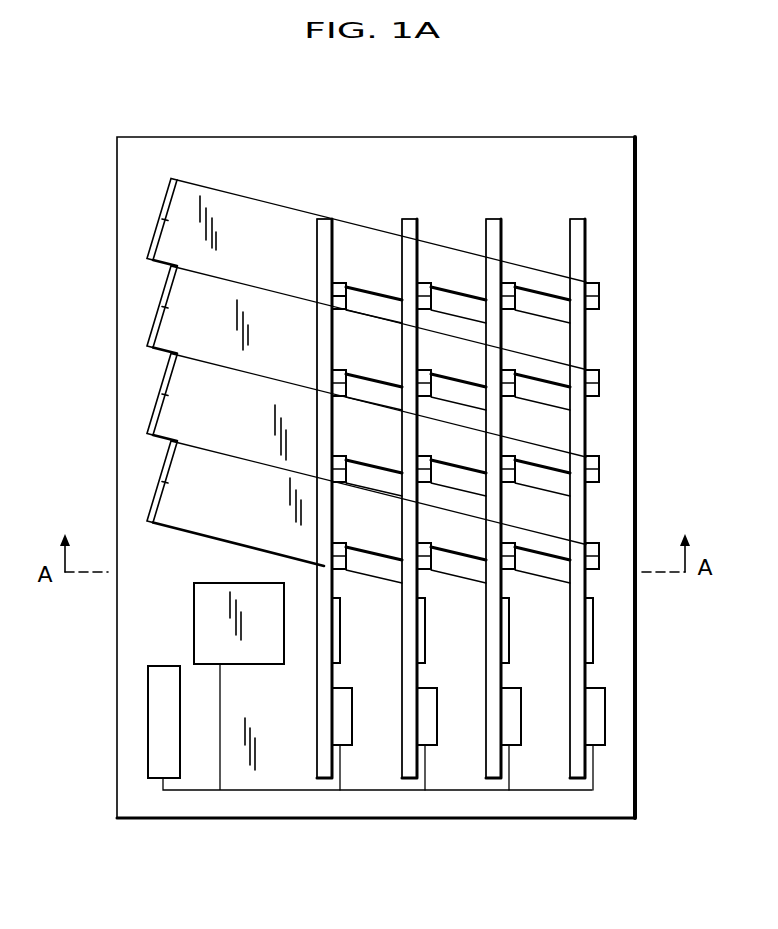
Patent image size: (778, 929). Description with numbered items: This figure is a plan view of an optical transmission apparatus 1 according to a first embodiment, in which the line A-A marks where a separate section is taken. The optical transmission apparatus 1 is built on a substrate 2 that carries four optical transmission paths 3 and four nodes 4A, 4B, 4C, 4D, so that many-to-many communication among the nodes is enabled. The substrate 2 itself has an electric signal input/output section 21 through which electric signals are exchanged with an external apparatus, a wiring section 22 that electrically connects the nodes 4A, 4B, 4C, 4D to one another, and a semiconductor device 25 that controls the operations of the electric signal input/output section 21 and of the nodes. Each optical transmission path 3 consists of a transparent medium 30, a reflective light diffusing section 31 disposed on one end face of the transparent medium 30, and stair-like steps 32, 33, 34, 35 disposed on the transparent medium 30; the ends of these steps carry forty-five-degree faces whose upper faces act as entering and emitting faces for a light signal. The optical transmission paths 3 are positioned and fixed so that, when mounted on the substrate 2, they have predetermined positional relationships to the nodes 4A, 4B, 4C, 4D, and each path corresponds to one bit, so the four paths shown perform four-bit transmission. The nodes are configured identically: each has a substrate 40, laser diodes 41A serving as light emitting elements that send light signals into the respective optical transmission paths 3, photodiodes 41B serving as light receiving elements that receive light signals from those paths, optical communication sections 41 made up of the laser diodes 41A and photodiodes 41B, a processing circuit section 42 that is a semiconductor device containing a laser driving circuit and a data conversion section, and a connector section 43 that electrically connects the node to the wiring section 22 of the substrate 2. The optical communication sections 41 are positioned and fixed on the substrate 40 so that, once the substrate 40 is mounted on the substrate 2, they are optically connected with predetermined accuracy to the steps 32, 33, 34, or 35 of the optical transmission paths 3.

The optical transmission apparatus 1 is at (406, 440).
The substrate 2 is at (636, 742).
The optical transmission path 3 is at (328, 362).
The transparent medium 30 is at (185, 208).
The reflective light diffusing section 31 is at (162, 218).
The step 32 is at (362, 289).
The step 33 is at (447, 290).
The step 34 is at (532, 290).
The step 35 is at (600, 291).
The substrate 40 is at (315, 733).
The optical communication section 41 is at (346, 283).
The laser diode 41A is at (332, 285).
The photodiode 41B is at (336, 283).
The processing circuit section 42 is at (341, 644).
The connector section 43 is at (342, 688).
The node 4A is at (335, 588).
The node 4B is at (420, 588).
The node 4C is at (504, 588).
The node 4D is at (590, 586).
The electric signal input/output section 21 is at (148, 728).
The wiring section 22 is at (258, 792).
The semiconductor device 25 is at (194, 624).